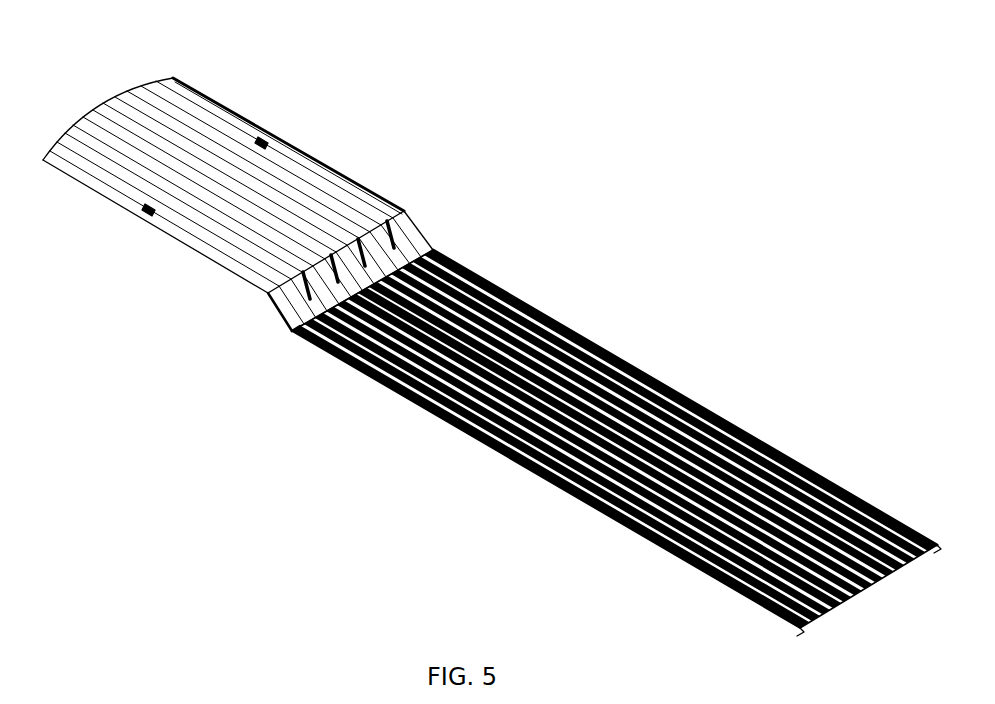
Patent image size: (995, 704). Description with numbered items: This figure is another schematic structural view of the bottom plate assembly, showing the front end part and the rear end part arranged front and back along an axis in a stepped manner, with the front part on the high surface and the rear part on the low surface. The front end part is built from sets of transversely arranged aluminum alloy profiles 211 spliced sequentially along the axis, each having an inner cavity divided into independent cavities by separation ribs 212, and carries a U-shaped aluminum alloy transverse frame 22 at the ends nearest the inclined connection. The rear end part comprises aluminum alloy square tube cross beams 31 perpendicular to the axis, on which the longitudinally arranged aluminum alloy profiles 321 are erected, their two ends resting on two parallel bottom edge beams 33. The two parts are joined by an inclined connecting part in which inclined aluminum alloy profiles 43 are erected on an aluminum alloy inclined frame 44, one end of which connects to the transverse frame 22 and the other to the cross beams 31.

The transversely arranged aluminum alloy profiles 211 is at (280, 50).
The separation ribs 212 is at (343, 87).
The aluminum alloy transverse frame 22 is at (470, 153).
The aluminum alloy square tube cross beams 31 is at (530, 200).
The longitudinally arranged aluminum alloy profiles 321 is at (587, 238).
The bottom edge beams 33 is at (685, 283).
The inclined aluminum alloy profiles 43 is at (152, 379).
The aluminum alloy inclined frame 44 is at (292, 332).